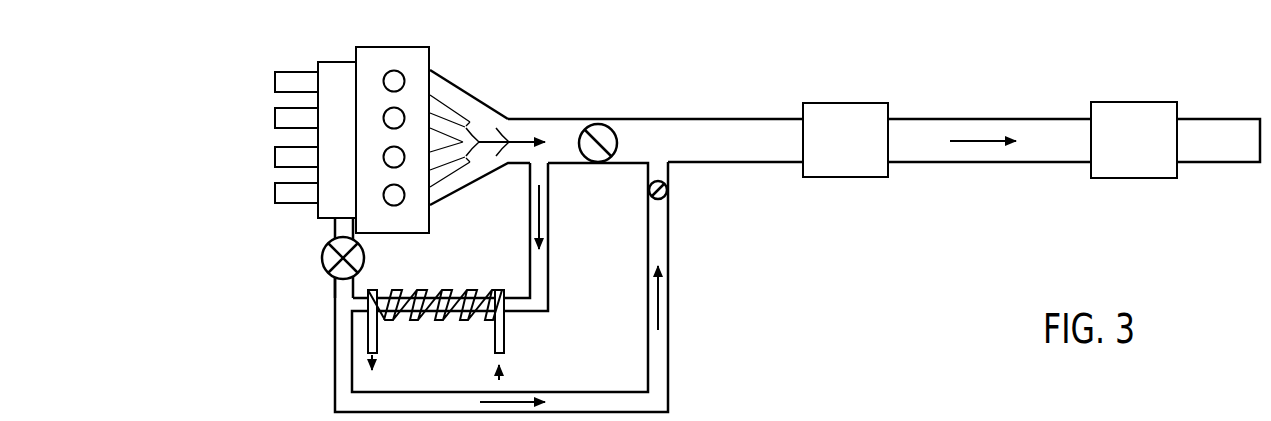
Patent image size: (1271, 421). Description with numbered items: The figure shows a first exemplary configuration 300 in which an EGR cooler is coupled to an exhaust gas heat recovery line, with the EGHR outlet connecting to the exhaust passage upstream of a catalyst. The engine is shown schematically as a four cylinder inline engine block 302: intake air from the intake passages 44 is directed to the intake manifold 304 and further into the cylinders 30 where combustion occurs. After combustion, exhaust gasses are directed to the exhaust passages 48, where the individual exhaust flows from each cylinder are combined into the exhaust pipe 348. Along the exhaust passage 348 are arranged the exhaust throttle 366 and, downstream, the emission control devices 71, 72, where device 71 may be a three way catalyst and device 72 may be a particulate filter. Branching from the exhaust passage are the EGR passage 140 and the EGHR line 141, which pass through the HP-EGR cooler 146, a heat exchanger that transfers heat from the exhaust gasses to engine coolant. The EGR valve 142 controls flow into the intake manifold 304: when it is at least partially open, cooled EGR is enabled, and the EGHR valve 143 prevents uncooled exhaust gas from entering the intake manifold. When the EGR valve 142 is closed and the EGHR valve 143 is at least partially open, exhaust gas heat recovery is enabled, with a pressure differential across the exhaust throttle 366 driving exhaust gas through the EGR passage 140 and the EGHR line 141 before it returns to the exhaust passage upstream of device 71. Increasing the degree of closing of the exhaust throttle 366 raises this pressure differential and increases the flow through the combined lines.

The first exemplary configuration 300 is at (246, 305).
The engine block 302 is at (370, 46).
The cylinders 30 is at (400, 71).
The intake manifold 304 is at (337, 140).
The intake passages 44 is at (292, 68).
The exhaust passages 48 is at (465, 90).
The exhaust pipe 348 is at (884, 140).
The exhaust throttle 366 is at (613, 129).
The emission control device 71 is at (845, 140).
The emission control device 72 is at (1134, 140).
The EGR passage 140 is at (549, 240).
The EGHR line 141 is at (668, 352).
The EGR valve 142 is at (322, 250).
The EGHR valve 143 is at (668, 188).
The HP-EGR cooler 146 is at (504, 325).